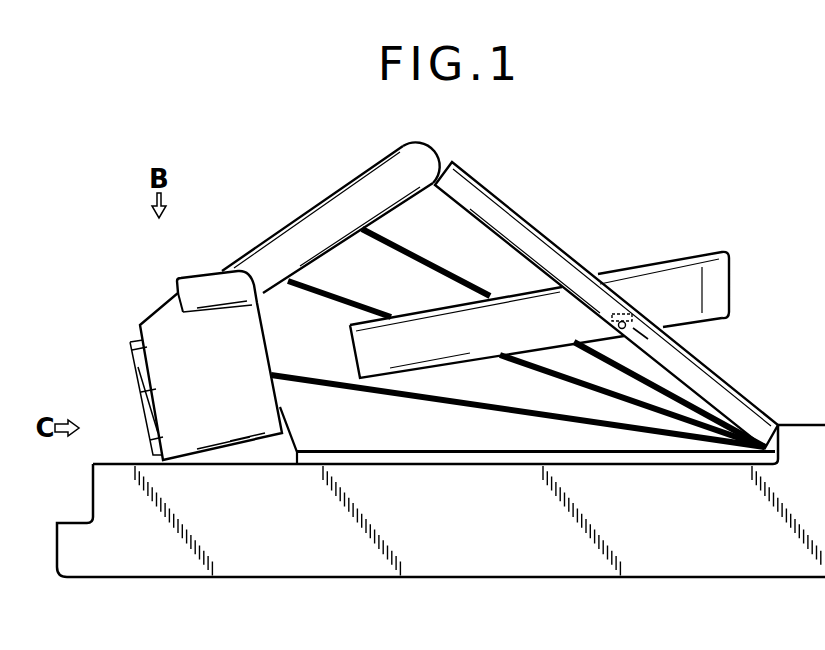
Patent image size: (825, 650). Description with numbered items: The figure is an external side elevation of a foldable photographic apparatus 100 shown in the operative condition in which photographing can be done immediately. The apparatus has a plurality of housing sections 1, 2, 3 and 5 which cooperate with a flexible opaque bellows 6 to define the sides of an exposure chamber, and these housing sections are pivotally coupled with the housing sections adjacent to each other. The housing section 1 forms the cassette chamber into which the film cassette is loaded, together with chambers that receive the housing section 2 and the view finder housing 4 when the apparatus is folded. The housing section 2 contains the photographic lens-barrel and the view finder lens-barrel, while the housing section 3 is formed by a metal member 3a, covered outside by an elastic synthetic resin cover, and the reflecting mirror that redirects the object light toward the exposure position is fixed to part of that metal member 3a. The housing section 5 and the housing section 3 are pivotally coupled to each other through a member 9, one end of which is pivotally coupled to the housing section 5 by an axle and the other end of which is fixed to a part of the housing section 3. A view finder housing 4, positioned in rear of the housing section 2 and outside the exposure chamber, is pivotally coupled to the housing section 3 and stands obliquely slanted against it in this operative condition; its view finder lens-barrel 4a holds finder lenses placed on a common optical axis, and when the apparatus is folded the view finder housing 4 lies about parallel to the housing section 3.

The housing section 1 is at (732, 560).
The housing section 2 is at (162, 322).
The housing section 3 is at (531, 238).
The metal member 3a is at (615, 313).
The view finder housing 4 is at (687, 293).
The view finder lens-barrel 4a is at (633, 328).
The housing section 5 is at (330, 211).
The flexible opaque bellows 6 is at (430, 281).
The member 9 is at (446, 165).
The photographic apparatus 100 is at (448, 290).